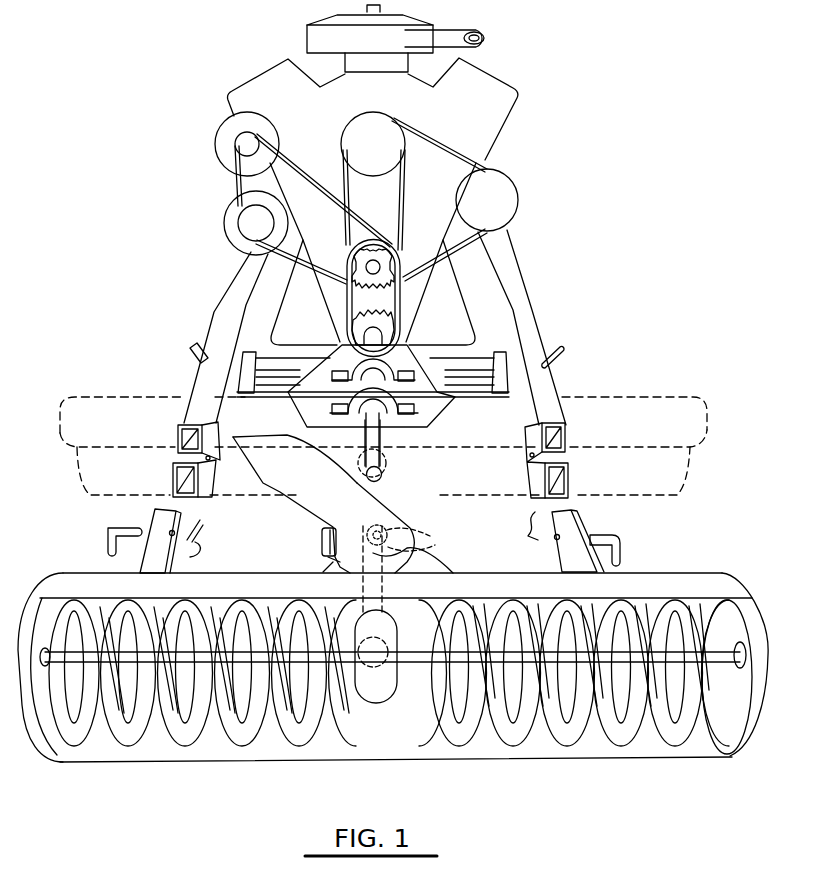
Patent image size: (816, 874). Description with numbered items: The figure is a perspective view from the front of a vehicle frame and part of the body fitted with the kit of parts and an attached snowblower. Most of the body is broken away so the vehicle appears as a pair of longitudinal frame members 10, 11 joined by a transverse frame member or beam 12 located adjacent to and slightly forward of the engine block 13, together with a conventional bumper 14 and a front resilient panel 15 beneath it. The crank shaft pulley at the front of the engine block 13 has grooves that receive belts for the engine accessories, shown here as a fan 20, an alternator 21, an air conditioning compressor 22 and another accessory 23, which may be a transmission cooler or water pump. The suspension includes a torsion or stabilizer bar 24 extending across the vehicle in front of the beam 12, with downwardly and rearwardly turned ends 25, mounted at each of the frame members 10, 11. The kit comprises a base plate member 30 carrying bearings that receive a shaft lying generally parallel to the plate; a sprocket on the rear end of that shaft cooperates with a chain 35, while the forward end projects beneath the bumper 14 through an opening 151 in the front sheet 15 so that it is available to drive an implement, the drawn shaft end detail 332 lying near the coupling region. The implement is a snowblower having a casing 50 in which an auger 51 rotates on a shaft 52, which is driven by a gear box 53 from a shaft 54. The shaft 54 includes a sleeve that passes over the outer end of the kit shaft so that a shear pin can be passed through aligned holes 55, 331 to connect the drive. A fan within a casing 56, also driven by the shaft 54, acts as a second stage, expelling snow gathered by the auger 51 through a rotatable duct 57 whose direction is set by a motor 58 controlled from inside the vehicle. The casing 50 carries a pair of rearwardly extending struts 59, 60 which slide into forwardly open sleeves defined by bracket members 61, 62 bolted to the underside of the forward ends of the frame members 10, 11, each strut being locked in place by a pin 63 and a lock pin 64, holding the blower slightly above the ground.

The longitudinal frame member 10 is at (240, 285).
The longitudinal frame member 11 is at (513, 281).
The transverse frame member or beam 12 is at (435, 352).
The engine block 13 is at (495, 95).
The bumper 14 is at (115, 400).
The front resilient panel 15 is at (95, 493).
The fan 20 is at (362, 135).
The alternator 21 is at (238, 218).
The air conditioning compressor 22 is at (237, 138).
The accessory 23 is at (497, 200).
The torsion or stabilizer bar 24 is at (296, 370).
The turned ends 25 is at (558, 360).
The base plate member 30 is at (452, 427).
The chain 35 is at (341, 297).
The casing 50 is at (470, 750).
The auger 51 is at (250, 745).
The shaft 52 is at (205, 665).
The gear box 53 is at (375, 680).
The shaft 54 is at (420, 552).
The holes 55 is at (395, 537).
The casing 56 is at (330, 560).
The rotatable duct 57 is at (317, 502).
The motor 58 is at (321, 541).
The strut 59 is at (160, 527).
The strut 60 is at (578, 531).
The bracket member 61 is at (205, 500).
The bracket member 62 is at (570, 480).
The pin 63 is at (107, 545).
The lock pin 64 is at (527, 530).
The opening 151 is at (408, 504).
The holes 331 is at (352, 464).
The shaft coupling 332 is at (390, 483).